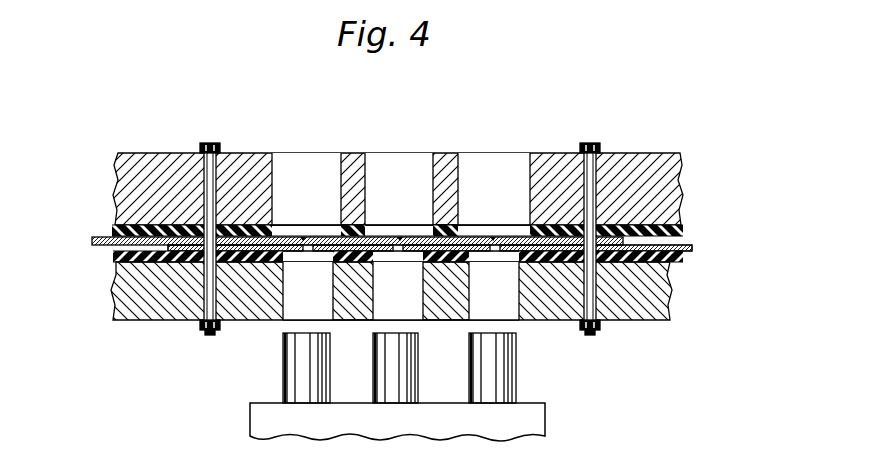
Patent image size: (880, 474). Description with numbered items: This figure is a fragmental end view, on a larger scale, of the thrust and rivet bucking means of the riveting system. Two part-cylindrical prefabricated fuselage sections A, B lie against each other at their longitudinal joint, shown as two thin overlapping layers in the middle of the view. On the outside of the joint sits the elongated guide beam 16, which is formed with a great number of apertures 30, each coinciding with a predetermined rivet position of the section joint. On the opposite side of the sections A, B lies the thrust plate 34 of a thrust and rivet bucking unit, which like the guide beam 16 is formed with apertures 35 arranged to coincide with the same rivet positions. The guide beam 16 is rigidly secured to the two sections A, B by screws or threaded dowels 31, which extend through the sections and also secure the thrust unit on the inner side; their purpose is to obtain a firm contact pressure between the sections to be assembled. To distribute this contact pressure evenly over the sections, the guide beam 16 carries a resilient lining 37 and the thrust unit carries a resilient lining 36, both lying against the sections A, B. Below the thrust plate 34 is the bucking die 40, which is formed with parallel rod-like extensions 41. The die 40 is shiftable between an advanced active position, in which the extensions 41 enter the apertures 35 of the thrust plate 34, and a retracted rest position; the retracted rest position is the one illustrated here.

The guide beam 16 is at (163, 160).
The apertures 30 is at (305, 160).
The screws or threaded dowels 31 is at (208, 143).
The thrust plate 34 is at (165, 293).
The apertures 35 is at (320, 308).
The resilient lining 36 is at (683, 262).
The resilient lining 37 is at (683, 227).
The bucking die 40 is at (535, 420).
The rod-like extensions 41 is at (302, 378).
The fuselage section A is at (93, 238).
The fuselage section B is at (690, 246).